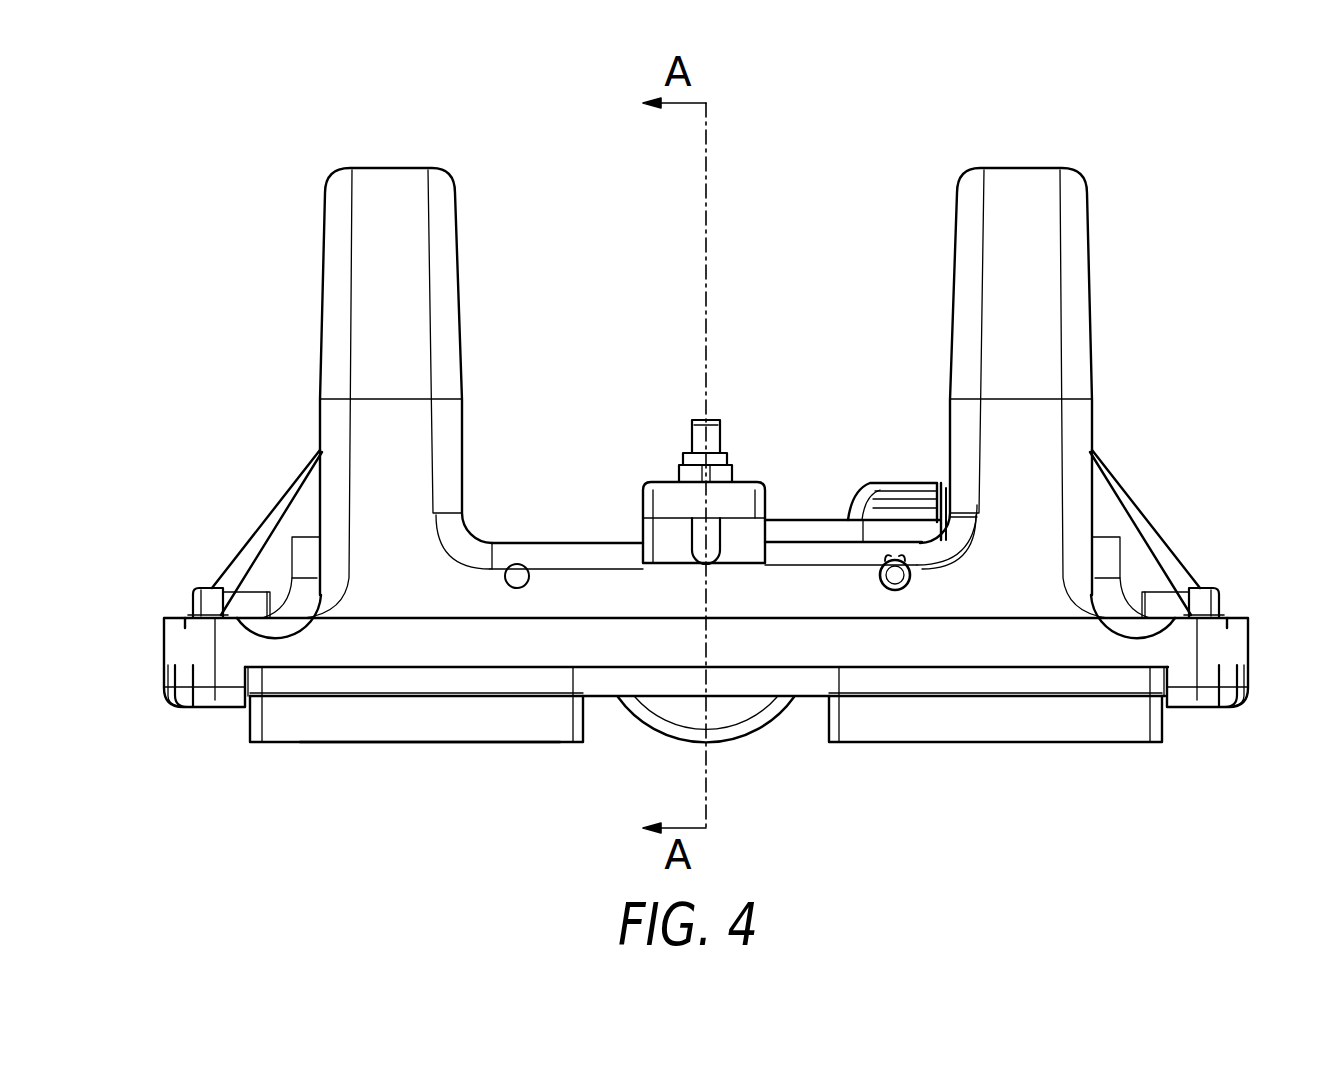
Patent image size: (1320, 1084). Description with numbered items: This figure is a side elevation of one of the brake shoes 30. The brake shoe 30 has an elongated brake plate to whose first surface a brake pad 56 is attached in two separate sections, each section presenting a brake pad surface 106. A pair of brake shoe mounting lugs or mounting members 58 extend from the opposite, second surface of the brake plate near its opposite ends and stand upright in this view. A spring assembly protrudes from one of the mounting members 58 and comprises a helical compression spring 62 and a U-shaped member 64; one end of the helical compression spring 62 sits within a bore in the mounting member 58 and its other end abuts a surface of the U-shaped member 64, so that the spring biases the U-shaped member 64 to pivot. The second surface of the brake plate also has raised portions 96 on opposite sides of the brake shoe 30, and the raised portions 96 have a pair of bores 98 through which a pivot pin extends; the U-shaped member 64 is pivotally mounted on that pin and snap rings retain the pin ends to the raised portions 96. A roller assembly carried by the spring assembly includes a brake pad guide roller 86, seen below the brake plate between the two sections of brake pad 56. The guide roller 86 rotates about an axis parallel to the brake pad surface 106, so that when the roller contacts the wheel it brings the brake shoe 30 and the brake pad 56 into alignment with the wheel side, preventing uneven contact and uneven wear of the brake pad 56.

The brake shoe 30 is at (256, 120).
The brake shoe mounting lug 58 is at (388, 168).
The U-shaped member 64 is at (590, 328).
The helical compression spring 62 is at (940, 485).
The raised portion 96 is at (568, 588).
The bore 98 is at (905, 591).
The brake pad 56 is at (352, 717).
The brake pad surface 106 is at (440, 742).
The brake pad guide roller 86 is at (670, 727).